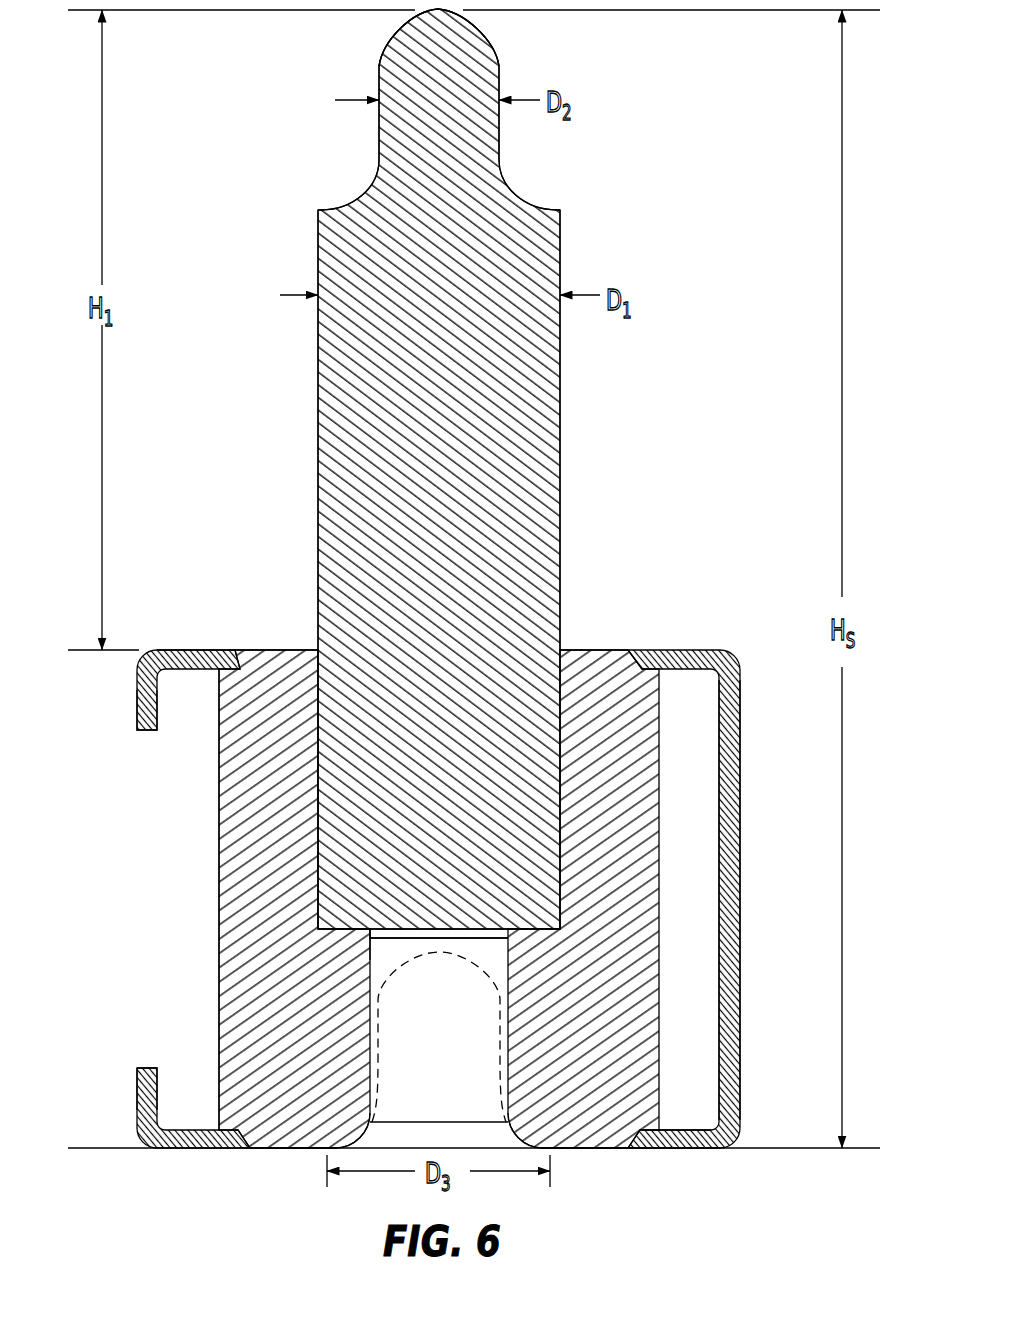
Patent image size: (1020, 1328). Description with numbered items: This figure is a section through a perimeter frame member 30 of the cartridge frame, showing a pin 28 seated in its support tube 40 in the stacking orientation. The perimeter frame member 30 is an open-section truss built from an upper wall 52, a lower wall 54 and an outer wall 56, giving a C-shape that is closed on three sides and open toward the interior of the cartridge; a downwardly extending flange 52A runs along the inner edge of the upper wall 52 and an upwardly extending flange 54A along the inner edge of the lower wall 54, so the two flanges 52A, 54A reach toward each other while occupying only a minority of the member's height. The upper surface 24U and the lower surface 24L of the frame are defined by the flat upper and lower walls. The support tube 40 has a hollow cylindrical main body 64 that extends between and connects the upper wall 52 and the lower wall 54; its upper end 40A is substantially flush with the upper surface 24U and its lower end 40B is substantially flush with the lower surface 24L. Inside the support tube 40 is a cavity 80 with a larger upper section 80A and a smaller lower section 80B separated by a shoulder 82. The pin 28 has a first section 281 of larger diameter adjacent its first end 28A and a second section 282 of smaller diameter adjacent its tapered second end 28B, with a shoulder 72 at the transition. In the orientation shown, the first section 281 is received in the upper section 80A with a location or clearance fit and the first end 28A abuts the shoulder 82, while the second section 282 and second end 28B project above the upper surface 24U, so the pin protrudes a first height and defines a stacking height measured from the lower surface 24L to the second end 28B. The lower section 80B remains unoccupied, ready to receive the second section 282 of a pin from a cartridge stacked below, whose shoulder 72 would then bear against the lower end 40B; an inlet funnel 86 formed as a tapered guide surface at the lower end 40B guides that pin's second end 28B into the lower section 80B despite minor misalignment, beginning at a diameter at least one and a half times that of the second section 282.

The pin 28 is at (578, 403).
The first section 281 is at (316, 397).
The second section 282 is at (497, 72).
The first end 28A is at (455, 931).
The second end 28B is at (402, 25).
The shoulder 72 is at (558, 207).
The support tube 40 is at (680, 883).
The upper end 40A is at (600, 648).
The lower end 40B is at (282, 1150).
The main body 64 is at (243, 1017).
The inlet funnel 86 is at (355, 1150).
The shoulder 82 is at (340, 926).
The cavity 80 is at (100, 848).
The upper section 80A is at (340, 855).
The lower section 80B is at (390, 1035).
The perimeter frame member 30 is at (743, 636).
The outer wall 56 is at (740, 982).
The lower surface 24L is at (670, 1152).
The upper surface 24U is at (222, 646).
The upper wall 52 is at (185, 650).
The flange 52A is at (137, 712).
The lower wall 54 is at (203, 1150).
The flange 54A is at (137, 1087).